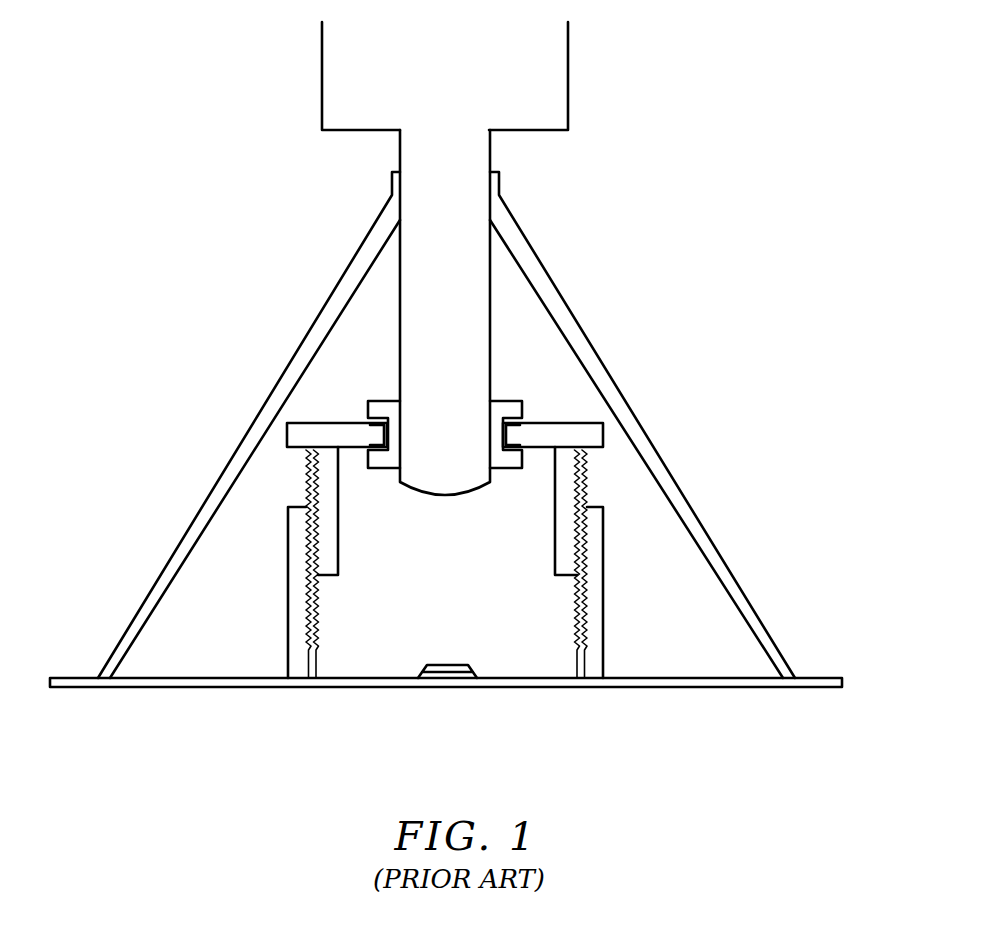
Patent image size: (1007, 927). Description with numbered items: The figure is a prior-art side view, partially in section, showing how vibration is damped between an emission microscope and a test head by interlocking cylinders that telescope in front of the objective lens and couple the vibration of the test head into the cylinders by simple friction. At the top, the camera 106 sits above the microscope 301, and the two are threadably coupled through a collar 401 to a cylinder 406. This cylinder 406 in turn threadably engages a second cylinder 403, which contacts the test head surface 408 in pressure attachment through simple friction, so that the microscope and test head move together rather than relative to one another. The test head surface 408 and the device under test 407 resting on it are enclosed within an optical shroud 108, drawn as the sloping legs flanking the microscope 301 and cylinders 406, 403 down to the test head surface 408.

The camera 106 is at (568, 65).
The optical shroud 108 is at (340, 280).
The microscope 301 is at (470, 325).
The collar 401 is at (507, 386).
The second cylinder 403 is at (288, 577).
The cylinder 406 is at (300, 450).
The device under test 407 is at (443, 665).
The test head surface 408 is at (338, 678).